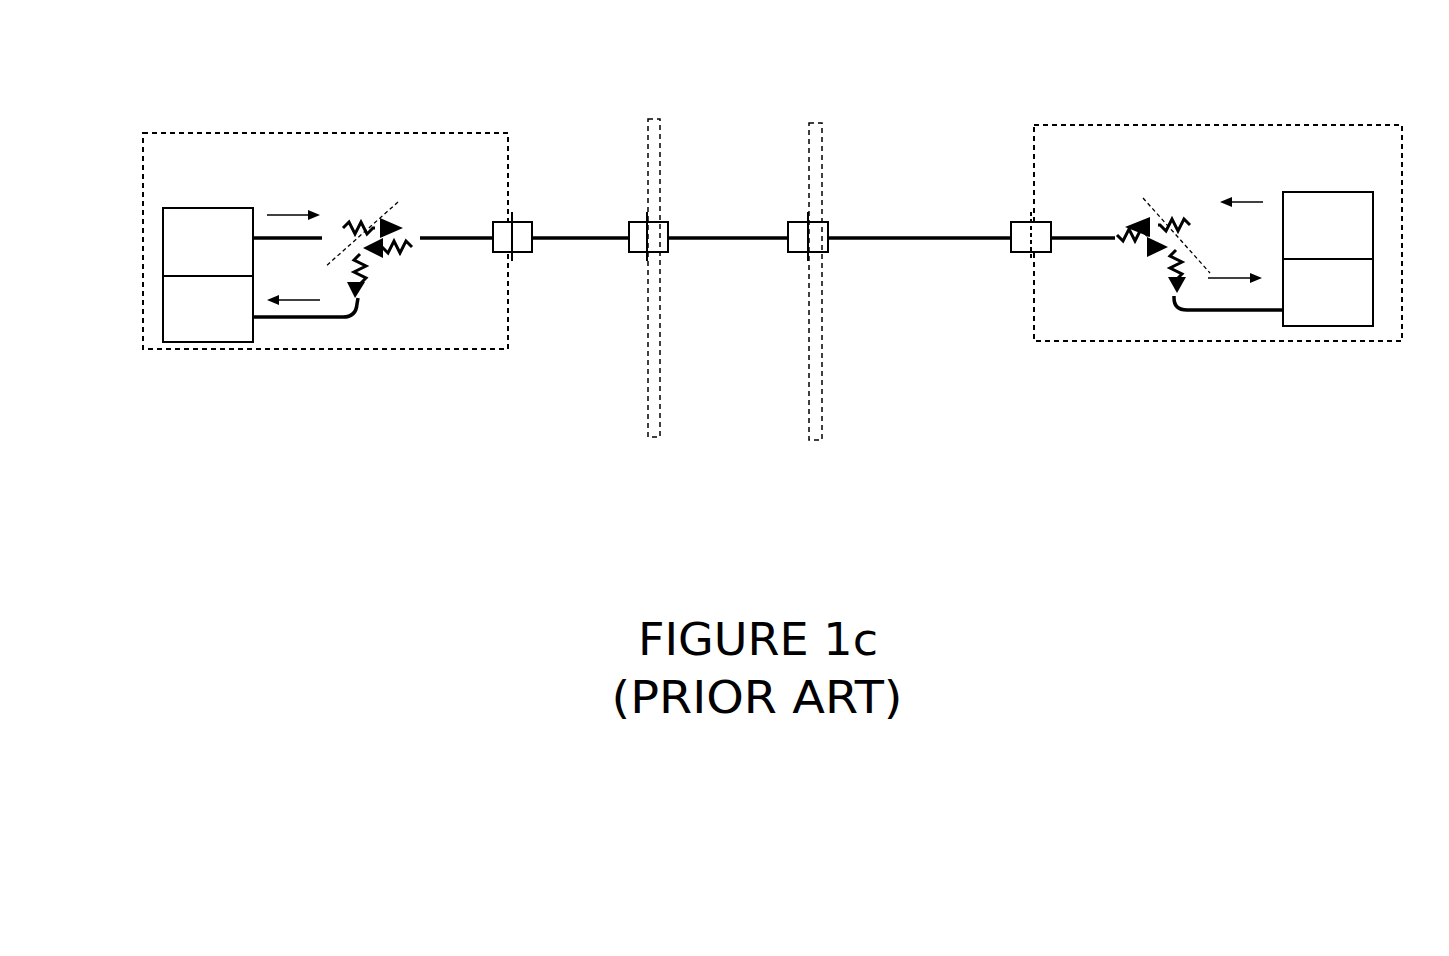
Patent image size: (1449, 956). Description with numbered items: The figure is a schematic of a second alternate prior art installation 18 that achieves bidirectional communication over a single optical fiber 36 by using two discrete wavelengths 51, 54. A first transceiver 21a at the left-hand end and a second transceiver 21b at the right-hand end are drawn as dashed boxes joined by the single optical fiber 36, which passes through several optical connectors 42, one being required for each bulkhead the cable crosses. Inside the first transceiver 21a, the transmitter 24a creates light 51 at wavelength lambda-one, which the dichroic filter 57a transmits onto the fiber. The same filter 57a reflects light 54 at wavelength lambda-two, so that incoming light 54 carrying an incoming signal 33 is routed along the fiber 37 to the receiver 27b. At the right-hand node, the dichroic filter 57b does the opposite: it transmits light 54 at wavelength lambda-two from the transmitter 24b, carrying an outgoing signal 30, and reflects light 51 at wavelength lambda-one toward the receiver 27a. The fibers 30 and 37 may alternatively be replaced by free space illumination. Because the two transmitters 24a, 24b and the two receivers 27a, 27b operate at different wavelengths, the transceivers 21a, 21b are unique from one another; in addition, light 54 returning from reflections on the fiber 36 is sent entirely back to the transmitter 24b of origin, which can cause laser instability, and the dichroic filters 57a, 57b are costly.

The second alternate installation 18 is at (727, 42).
The first transceiver 21a is at (228, 131).
The second transceiver 21b is at (1367, 118).
The first transmitter 24a is at (195, 208).
The second transmitter 24b is at (1365, 218).
The first receiver 27a is at (1343, 327).
The second receiver 27b is at (219, 340).
The outgoing signal 30 is at (307, 209).
The incoming signal 33 is at (305, 292).
The single optical fiber 36 is at (922, 233).
The fiber 37 is at (268, 322).
The optical connector 42 is at (648, 120).
The light at wavelength lambda-one 51 is at (402, 223).
The light at wavelength lambda-two 54 is at (358, 293).
The dichroic filter 57a is at (382, 200).
The dichroic filter 57b is at (1150, 200).